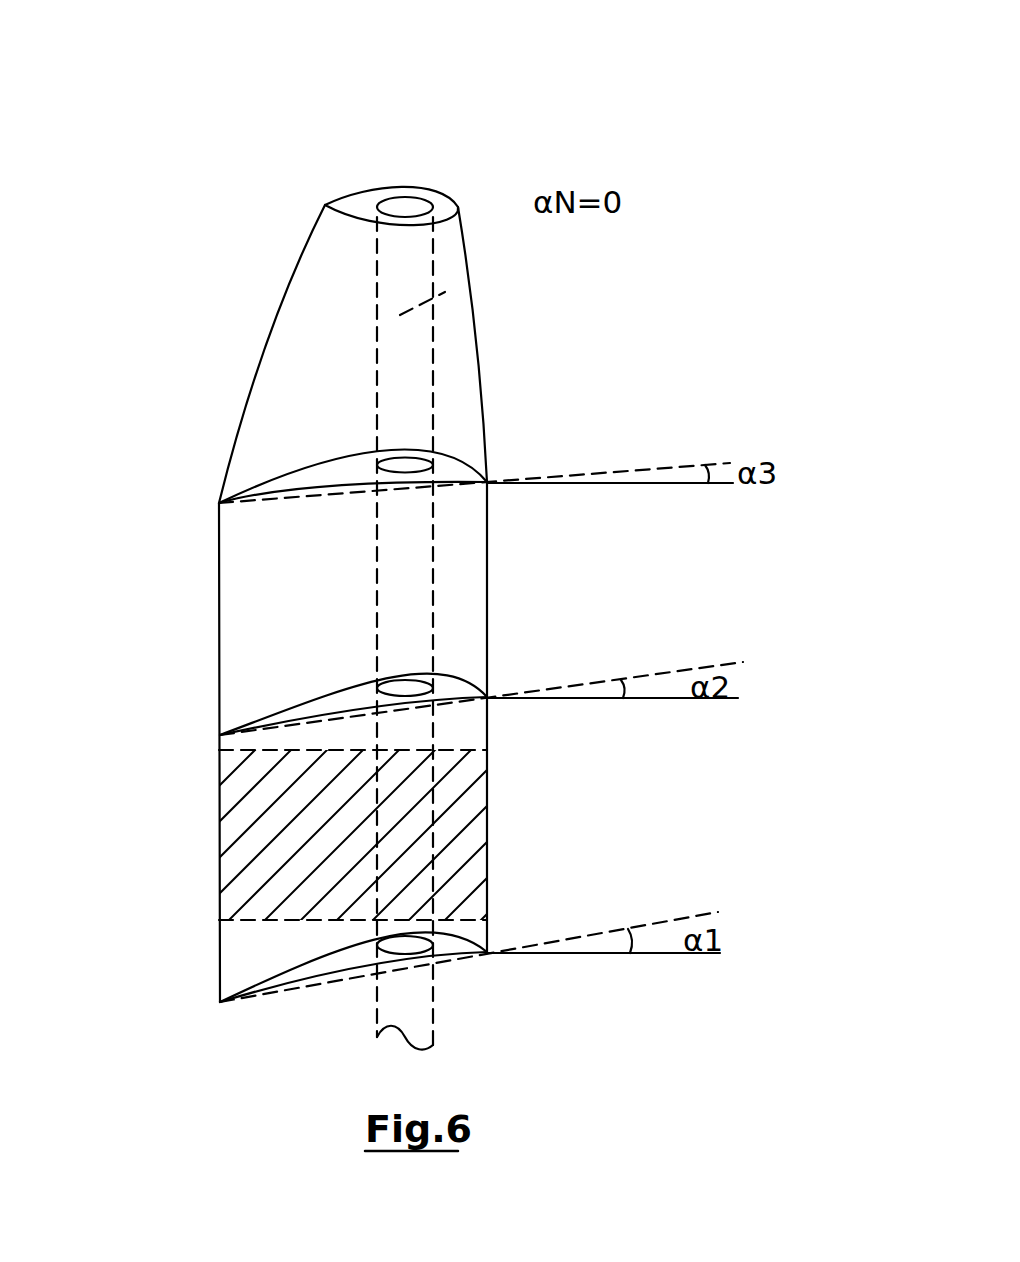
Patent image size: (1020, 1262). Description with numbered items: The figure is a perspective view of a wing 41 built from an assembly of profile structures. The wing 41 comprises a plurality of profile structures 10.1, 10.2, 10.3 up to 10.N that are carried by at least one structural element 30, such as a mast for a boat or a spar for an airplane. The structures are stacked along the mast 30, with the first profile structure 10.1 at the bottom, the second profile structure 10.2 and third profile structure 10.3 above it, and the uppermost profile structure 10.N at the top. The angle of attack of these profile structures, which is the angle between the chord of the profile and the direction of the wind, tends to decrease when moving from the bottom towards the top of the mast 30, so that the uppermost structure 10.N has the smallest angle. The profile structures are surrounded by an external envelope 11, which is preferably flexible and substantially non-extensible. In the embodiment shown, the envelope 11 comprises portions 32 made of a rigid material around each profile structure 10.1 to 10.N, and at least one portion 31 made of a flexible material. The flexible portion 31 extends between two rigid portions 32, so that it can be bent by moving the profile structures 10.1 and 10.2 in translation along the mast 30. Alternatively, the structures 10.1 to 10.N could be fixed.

The wing 41 is at (535, 127).
The profile structure 10.N is at (282, 202).
The structural element 30 is at (450, 290).
The external envelope 11 is at (497, 358).
The profile structure 10.3 is at (198, 503).
The portion of rigid material 32 is at (283, 612).
The profile structure 10.2 is at (198, 743).
The portion of flexible material 31 is at (463, 833).
The profile structure 10.1 is at (208, 1008).